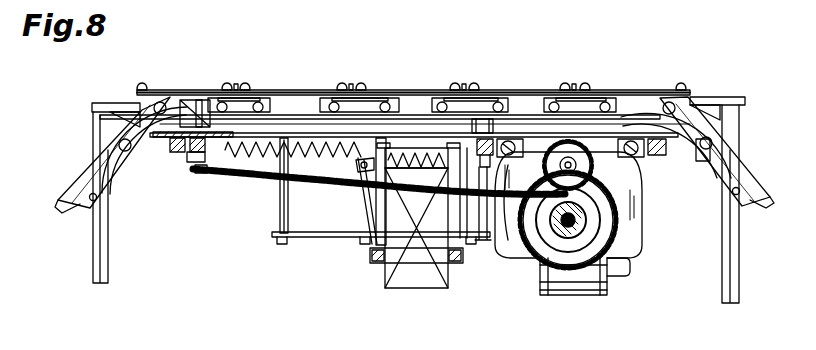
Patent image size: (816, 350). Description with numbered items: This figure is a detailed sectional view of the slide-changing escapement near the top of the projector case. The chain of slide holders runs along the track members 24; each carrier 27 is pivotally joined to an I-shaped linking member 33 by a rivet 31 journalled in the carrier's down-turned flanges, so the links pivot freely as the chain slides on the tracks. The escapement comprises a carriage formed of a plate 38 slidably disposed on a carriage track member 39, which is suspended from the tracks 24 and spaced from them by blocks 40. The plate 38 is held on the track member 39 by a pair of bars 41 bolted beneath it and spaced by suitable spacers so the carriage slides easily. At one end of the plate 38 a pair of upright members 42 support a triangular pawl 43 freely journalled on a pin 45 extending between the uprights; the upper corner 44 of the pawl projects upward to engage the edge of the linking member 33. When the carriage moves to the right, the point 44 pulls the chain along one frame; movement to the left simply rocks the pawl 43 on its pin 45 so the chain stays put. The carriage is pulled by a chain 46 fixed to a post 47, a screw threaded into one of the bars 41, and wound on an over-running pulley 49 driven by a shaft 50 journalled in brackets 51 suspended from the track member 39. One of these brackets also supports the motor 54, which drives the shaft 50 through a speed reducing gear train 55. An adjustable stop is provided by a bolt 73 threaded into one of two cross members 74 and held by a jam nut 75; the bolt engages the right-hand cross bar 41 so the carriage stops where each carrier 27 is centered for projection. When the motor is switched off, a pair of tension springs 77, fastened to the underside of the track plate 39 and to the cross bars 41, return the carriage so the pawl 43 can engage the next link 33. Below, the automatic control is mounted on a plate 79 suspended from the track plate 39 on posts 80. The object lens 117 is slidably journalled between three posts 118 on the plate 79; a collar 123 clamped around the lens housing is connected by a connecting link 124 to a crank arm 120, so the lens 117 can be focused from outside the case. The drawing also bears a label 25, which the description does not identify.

The track member 24 is at (110, 265).
The curved support arm 25 is at (113, 115).
The carrier 27 is at (299, 97).
The rivet 31 is at (97, 199).
The linking member 33 is at (128, 96).
The plate 38 is at (309, 133).
The carriage track member 39 is at (522, 118).
The block 40 is at (480, 125).
The bar 41 is at (420, 135).
The upright member 42 is at (200, 110).
The pawl 43 is at (185, 113).
The upper corner 44 is at (203, 112).
The pin 45 is at (425, 127).
The chain 46 is at (232, 175).
The post 47 is at (185, 170).
The over-running pulley 49 is at (560, 258).
The shaft 50 is at (582, 226).
The bracket 51 is at (492, 250).
The motor 54 is at (620, 266).
The speed reducing gear train 55 is at (630, 198).
The bolt 73 is at (699, 170).
The cross member 74 is at (118, 120).
The jam nut 75 is at (621, 170).
The tension spring 77 is at (263, 173).
The plate 79 is at (305, 240).
The post 80 is at (277, 223).
The object lens 117 is at (402, 280).
The post 118 is at (393, 220).
The crank arm 120 is at (388, 160).
The collar 123 is at (395, 257).
The connecting link 124 is at (365, 225).